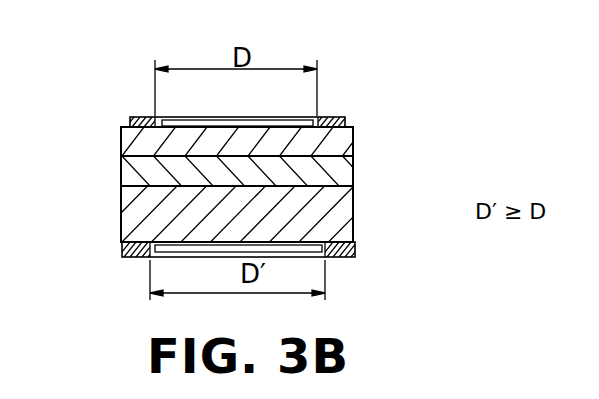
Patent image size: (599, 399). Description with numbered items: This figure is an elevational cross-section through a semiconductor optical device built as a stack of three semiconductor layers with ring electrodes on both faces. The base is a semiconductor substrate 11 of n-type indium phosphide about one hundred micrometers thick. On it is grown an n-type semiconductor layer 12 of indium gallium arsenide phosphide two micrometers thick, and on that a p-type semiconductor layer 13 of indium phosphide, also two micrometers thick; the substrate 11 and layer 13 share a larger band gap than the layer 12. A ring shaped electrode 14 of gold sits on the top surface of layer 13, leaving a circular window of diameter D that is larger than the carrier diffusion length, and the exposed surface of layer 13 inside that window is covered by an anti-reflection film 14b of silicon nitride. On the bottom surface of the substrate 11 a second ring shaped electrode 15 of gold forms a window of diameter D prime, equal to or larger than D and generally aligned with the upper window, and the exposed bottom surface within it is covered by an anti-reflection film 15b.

The semiconductor substrate 11 is at (348, 207).
The n-type semiconductor layer 12 is at (348, 172).
The p-type semiconductor layer 13 is at (348, 141).
The ring shaped electrode 14 is at (130, 118).
The anti-reflection film 14b is at (188, 118).
The ring shaped electrode 15 is at (355, 258).
The anti-reflection film 15b is at (288, 246).